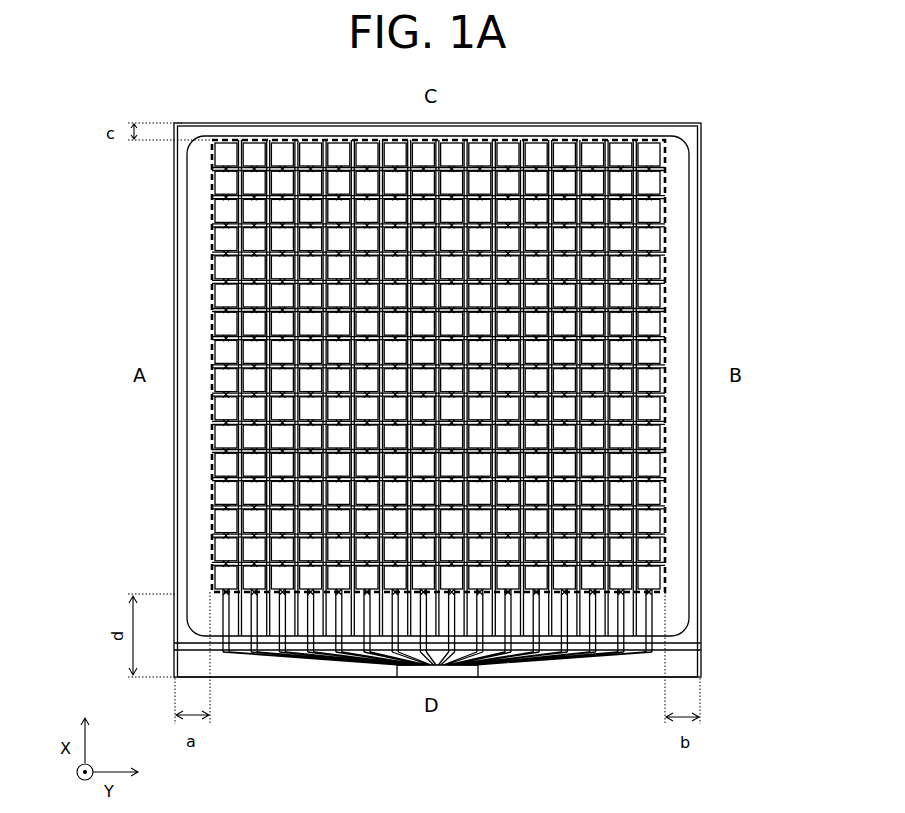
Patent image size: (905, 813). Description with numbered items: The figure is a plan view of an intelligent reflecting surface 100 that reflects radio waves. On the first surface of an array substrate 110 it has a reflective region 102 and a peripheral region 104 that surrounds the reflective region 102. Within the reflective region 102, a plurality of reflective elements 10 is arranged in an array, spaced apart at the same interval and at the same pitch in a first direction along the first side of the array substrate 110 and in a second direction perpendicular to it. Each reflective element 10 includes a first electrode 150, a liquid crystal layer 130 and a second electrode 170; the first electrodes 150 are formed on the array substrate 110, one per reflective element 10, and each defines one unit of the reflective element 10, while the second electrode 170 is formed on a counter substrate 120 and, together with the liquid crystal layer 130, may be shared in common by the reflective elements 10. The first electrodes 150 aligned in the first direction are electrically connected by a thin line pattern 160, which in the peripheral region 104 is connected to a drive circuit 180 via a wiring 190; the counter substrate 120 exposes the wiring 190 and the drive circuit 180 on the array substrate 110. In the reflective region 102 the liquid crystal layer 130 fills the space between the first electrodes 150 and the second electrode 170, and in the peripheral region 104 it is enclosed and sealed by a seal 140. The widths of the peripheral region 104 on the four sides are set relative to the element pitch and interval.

The intelligent reflecting surface 100 is at (213, 101).
The array substrate 110 is at (696, 672).
The counter substrate 120 is at (700, 641).
The liquid crystal layer 130 is at (678, 607).
The seal 140 is at (700, 569).
The first electrode 150 is at (650, 497).
The thin line pattern 160 is at (668, 445).
The second electrode 170 is at (680, 408).
The drive circuit 180 is at (470, 678).
The wiring 190 is at (502, 678).
The reflective element 10 is at (668, 255).
The reflective region 102 is at (666, 178).
The peripheral region 104 is at (702, 213).